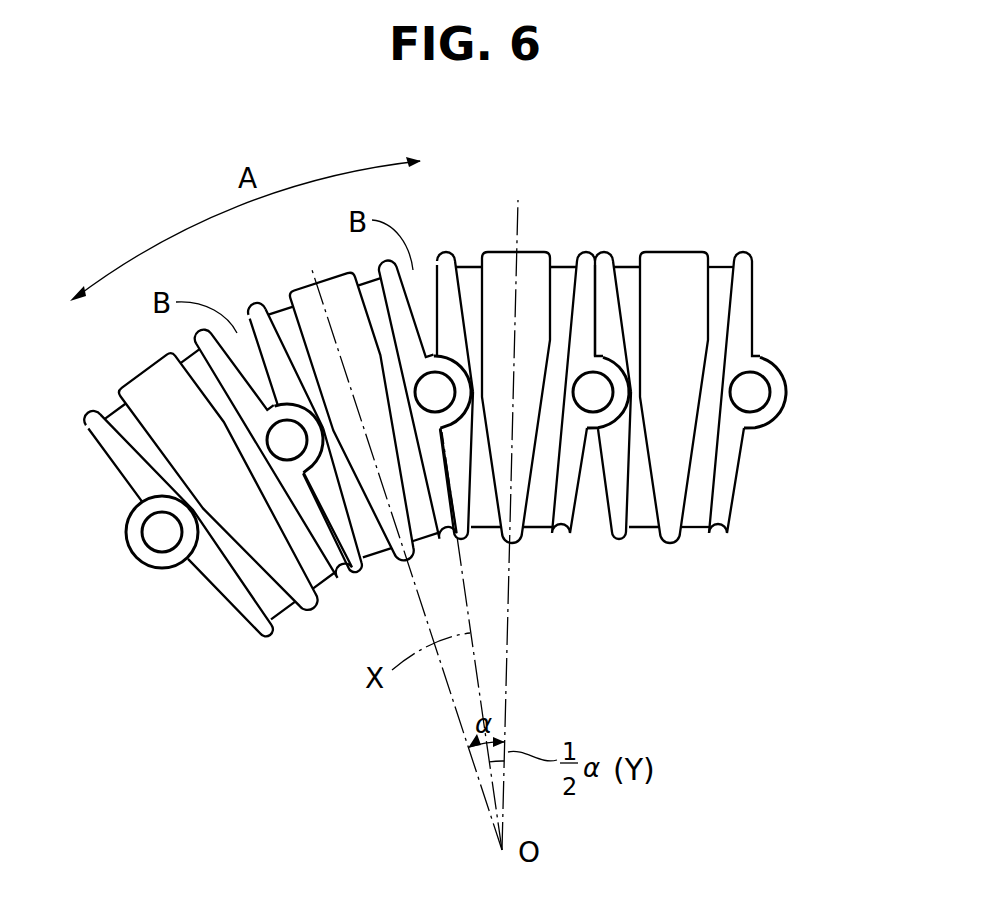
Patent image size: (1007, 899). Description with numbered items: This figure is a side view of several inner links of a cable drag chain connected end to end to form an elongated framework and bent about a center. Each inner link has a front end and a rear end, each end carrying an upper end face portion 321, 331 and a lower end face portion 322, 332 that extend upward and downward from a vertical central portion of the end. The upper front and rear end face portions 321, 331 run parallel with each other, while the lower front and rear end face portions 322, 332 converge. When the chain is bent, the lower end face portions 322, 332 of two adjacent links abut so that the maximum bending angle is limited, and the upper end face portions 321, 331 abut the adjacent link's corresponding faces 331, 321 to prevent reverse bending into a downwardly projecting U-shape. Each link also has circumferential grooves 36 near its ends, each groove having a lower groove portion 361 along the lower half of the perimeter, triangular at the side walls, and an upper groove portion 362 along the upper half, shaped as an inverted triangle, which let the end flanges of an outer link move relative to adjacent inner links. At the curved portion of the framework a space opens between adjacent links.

The circumferential groove 36 is at (625, 259).
The upper front end face portion 321 is at (433, 268).
The lower front end face portion 322 is at (608, 512).
The upper rear end face portion 331 is at (754, 293).
The lower rear end face portion 332 is at (733, 508).
The lower groove portion 361 is at (703, 531).
The upper groove portion 362 is at (722, 268).